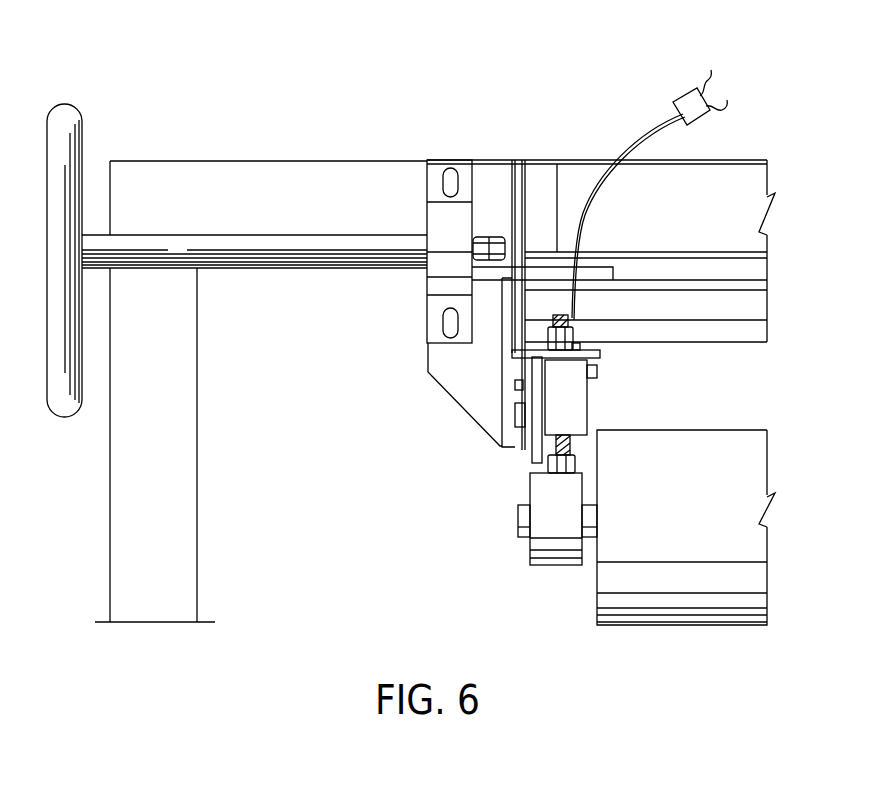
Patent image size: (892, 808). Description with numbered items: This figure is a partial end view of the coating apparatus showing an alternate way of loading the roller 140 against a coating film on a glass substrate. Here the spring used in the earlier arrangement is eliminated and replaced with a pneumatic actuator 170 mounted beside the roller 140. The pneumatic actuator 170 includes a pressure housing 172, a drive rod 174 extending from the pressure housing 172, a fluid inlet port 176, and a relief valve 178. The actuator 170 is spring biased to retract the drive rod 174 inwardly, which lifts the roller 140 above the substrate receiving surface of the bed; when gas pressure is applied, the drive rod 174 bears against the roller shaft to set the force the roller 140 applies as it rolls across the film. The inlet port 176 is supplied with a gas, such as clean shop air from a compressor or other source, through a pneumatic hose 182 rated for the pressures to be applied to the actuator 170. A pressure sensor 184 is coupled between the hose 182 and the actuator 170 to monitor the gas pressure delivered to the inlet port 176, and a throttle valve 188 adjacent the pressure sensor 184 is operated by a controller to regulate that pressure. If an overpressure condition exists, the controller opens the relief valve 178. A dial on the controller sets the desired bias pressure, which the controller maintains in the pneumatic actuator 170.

The roller 140 is at (698, 498).
The pneumatic actuator 170 is at (614, 410).
The pressure housing 172 is at (587, 390).
The drive rod 174 is at (550, 442).
The fluid inlet port 176 is at (577, 365).
The relief valve 178 is at (598, 366).
The pneumatic hose 182 is at (662, 128).
The pressure sensor 184 is at (520, 351).
The throttle valve 188 is at (675, 97).